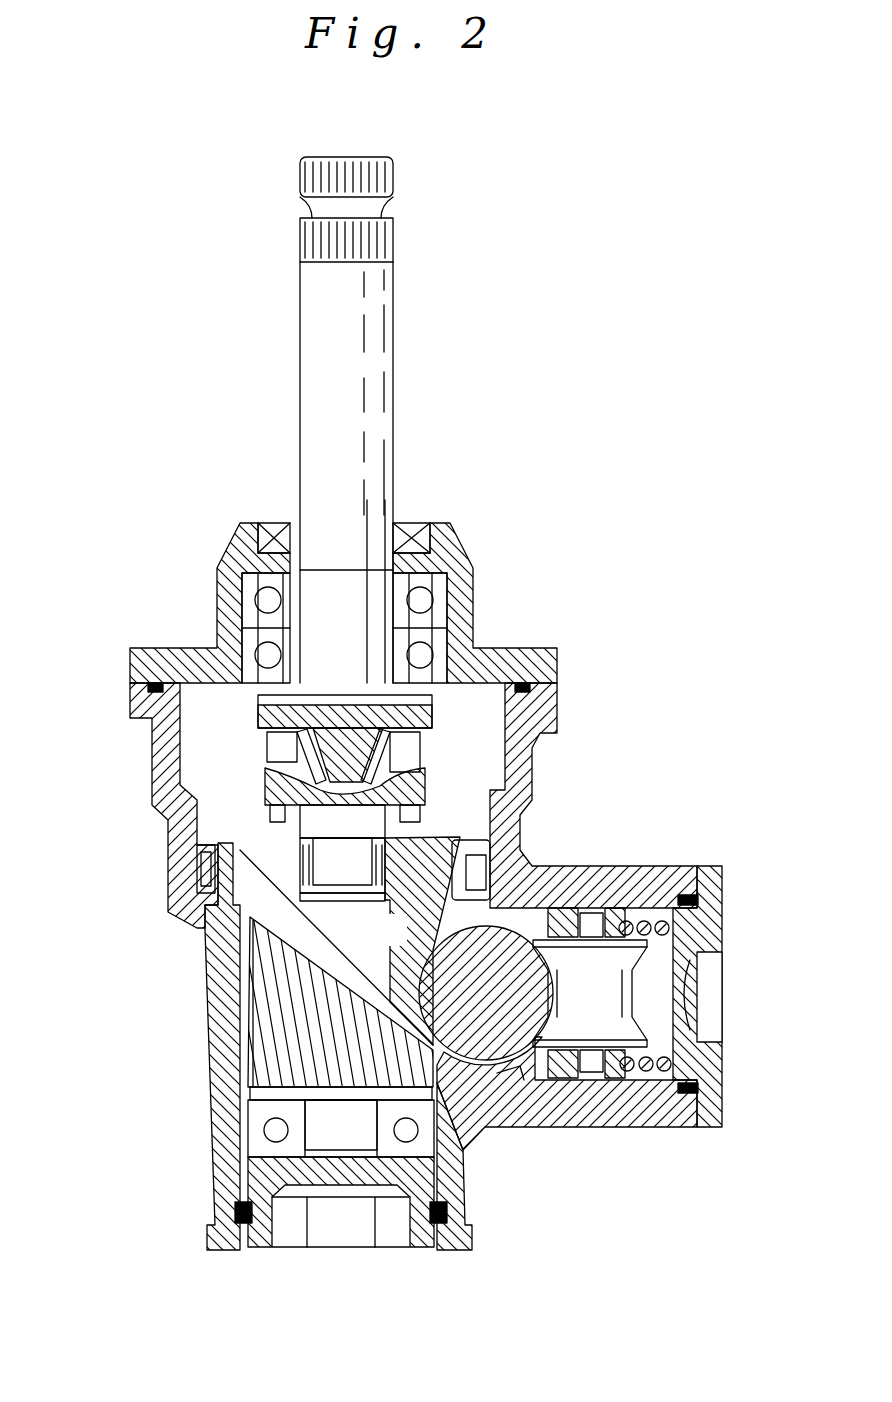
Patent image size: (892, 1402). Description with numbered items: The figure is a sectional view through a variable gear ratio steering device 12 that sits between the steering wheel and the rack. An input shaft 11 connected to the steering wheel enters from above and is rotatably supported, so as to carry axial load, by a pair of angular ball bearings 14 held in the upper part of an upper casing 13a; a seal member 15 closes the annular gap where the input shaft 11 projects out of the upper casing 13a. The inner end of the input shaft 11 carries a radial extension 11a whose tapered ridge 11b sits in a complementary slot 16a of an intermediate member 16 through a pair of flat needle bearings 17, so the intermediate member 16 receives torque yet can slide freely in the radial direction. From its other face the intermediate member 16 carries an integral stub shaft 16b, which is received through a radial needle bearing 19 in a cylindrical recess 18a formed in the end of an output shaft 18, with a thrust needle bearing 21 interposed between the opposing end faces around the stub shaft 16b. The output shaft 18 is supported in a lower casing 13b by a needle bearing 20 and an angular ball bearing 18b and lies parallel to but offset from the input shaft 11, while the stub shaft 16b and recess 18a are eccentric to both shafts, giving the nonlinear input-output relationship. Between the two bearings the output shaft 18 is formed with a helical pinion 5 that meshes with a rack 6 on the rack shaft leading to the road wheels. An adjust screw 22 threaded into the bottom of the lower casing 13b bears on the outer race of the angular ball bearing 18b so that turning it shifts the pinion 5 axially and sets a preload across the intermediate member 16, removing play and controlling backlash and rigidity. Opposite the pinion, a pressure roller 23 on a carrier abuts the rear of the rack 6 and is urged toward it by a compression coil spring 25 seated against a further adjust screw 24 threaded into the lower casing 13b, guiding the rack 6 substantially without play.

The helical pinion 5 is at (453, 1087).
The rack 6 is at (500, 1073).
The input shaft 11 is at (395, 400).
The radial extension 11a is at (435, 712).
The ridge 11b is at (340, 760).
The variable gear ratio steering device 12 is at (384, 567).
The upper casing 13a is at (238, 545).
The lower casing 13b is at (152, 764).
The angular ball bearings 14 is at (248, 598).
The seal member 15 is at (412, 520).
The intermediate member 16 is at (273, 747).
The slot 16a is at (370, 748).
The stub shaft 16b is at (370, 888).
The flat needle bearings 17 is at (268, 768).
The output shaft 18 is at (205, 932).
The cylindrical recess 18a is at (300, 867).
The angular ball bearing 18b is at (264, 1137).
The radial needle bearing 19 is at (395, 860).
The needle bearing 20 is at (200, 870).
The thrust needle bearing 21 is at (270, 828).
The adjust screw 22 is at (420, 1250).
The pressure roller 23 is at (634, 998).
The adjust screw 24 is at (724, 928).
The compression coil spring 25 is at (645, 918).